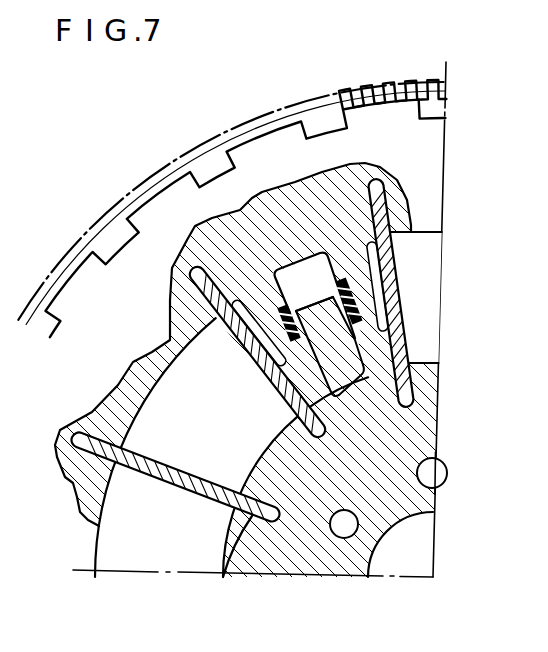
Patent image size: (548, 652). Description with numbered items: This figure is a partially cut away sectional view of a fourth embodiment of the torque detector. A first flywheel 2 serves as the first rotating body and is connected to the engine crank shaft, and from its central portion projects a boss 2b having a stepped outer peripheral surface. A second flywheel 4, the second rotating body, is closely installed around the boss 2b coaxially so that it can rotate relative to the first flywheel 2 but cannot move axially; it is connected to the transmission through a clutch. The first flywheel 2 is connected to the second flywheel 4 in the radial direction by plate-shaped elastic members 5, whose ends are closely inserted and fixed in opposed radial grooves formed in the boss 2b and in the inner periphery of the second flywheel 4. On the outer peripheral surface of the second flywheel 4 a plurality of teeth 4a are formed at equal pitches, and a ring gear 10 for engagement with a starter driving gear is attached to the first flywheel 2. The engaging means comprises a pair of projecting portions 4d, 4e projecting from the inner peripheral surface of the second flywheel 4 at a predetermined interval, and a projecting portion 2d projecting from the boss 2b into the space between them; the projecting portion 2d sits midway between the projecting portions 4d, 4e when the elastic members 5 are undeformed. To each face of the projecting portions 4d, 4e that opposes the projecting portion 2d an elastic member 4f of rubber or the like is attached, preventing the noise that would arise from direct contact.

The first flywheel 2 is at (212, 547).
The boss 2b is at (254, 550).
The projecting portion 2d is at (333, 353).
The second flywheel 4 is at (189, 230).
The teeth 4a is at (284, 116).
The projecting portion 4d is at (362, 290).
The projecting portion 4e is at (277, 326).
The elastic member 4f is at (356, 322).
The plate-shaped elastic member 5 is at (158, 470).
The ring gear 10 is at (372, 80).